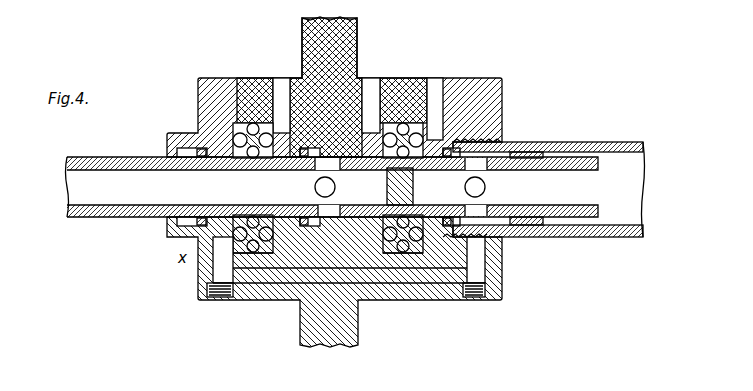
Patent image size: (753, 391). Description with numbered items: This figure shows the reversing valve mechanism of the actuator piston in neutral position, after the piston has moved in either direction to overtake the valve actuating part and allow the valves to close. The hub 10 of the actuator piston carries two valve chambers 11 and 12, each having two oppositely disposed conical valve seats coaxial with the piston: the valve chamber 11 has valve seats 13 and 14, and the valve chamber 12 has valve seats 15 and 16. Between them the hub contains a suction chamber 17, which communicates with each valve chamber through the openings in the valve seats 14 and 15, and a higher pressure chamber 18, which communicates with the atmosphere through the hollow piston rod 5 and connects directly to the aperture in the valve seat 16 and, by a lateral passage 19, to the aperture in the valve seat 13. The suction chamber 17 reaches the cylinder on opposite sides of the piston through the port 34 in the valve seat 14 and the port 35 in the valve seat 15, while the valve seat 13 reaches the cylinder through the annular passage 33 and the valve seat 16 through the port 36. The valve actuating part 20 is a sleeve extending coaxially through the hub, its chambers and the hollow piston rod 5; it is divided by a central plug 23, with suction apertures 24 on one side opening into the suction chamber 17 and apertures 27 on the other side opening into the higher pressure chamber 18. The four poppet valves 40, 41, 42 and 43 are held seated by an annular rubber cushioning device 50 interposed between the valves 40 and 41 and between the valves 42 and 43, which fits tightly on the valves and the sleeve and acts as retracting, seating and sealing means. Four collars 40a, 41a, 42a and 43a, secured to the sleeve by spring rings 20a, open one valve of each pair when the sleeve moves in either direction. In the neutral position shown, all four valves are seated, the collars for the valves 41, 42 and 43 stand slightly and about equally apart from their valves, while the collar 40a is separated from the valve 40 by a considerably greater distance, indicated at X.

The hollow piston rod 5 is at (592, 142).
The hub 10 is at (503, 88).
The valve chamber 11 is at (242, 115).
The valve chamber 12 is at (400, 128).
The valve seat 13 is at (218, 240).
The valve seat 14 is at (288, 302).
The valve seat 15 is at (360, 273).
The valve seat 16 is at (498, 288).
The suction chamber 17 is at (337, 222).
The higher pressure chamber 18 is at (503, 240).
The lateral passage 19 is at (348, 278).
The valve actuating part 20 is at (125, 213).
The spring rings 20a is at (178, 152).
The central plug 23 is at (414, 187).
The suction apertures 24 is at (336, 187).
The apertures 27 is at (486, 187).
The annular passage 33 is at (168, 222).
The port 34 is at (285, 84).
The port 35 is at (372, 92).
The port 36 is at (438, 88).
The valve 40 is at (205, 150).
The collar 40a is at (196, 219).
The valve 41 is at (270, 262).
The collar 41a is at (303, 157).
The valve 42 is at (384, 246).
The collar 42a is at (362, 226).
The valve 43 is at (430, 227).
The collar 43a is at (503, 130).
The rubber cushioning device 50 is at (420, 237).